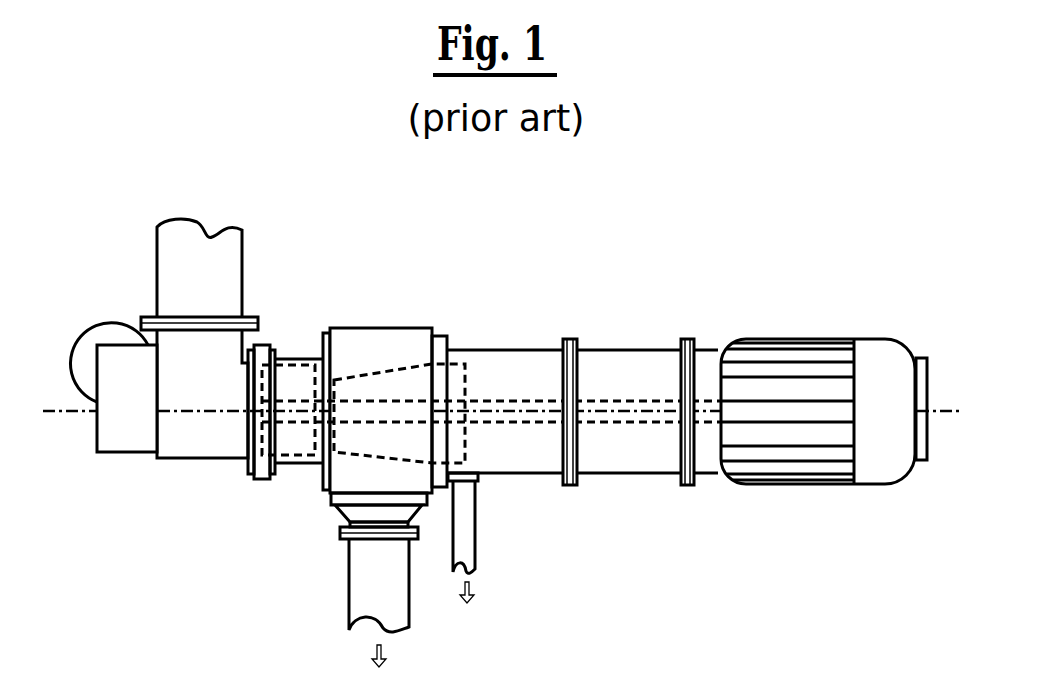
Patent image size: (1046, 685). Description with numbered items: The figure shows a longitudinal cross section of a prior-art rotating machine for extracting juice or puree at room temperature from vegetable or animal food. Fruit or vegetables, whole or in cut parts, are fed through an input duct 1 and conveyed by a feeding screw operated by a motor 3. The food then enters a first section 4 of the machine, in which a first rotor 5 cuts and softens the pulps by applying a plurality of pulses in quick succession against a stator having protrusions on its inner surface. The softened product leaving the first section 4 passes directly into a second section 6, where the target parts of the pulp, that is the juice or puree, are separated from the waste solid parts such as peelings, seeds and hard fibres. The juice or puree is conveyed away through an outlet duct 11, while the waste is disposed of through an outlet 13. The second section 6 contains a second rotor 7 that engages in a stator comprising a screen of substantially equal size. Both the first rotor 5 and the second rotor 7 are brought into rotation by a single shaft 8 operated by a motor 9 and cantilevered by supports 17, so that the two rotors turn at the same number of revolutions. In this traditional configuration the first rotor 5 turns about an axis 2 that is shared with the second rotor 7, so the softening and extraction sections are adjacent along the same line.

The input duct 1 is at (188, 432).
The axis 2 is at (70, 417).
The motor 3 is at (100, 337).
The first section 4 is at (283, 465).
The first rotor 5 is at (289, 366).
The second section 6 is at (410, 330).
The second rotor 7 is at (372, 372).
The shaft 8 is at (493, 400).
The motor 9 is at (812, 343).
The outlet duct 11 is at (357, 567).
The outlet 13 is at (468, 523).
The supports 17 is at (620, 362).